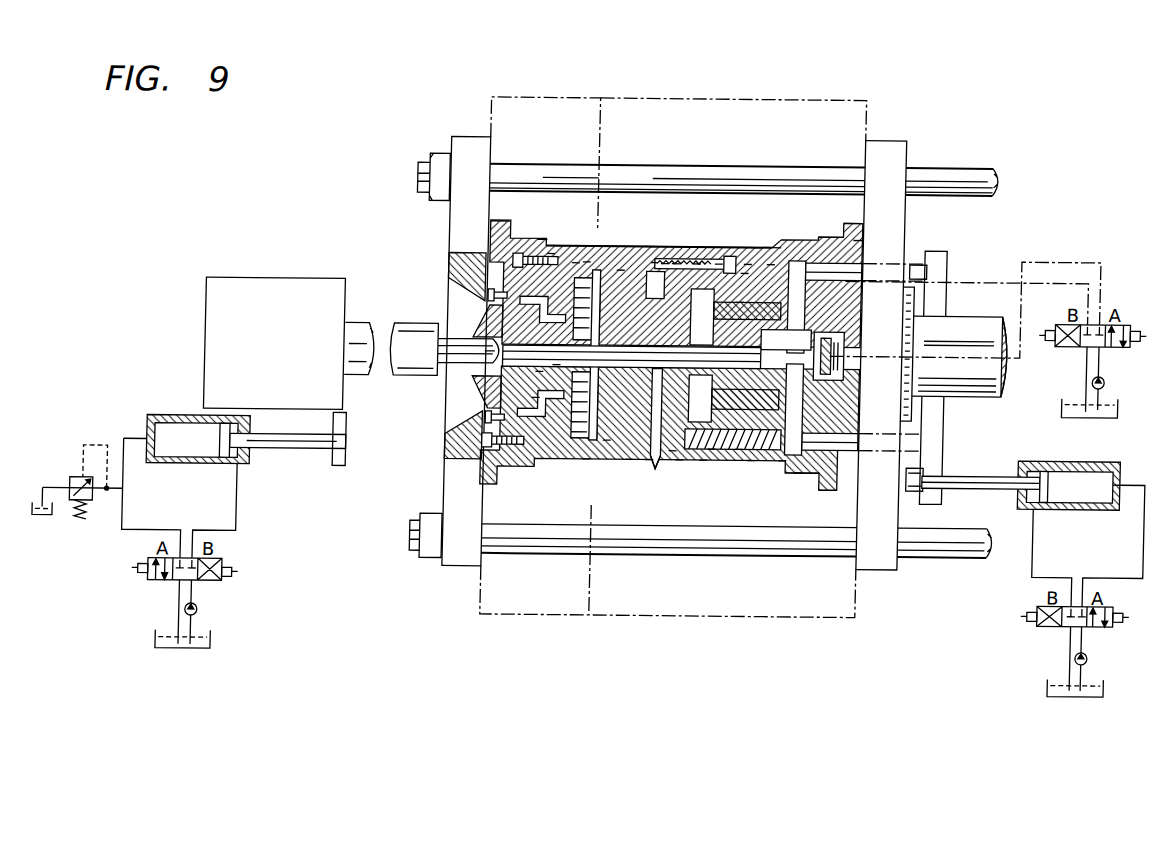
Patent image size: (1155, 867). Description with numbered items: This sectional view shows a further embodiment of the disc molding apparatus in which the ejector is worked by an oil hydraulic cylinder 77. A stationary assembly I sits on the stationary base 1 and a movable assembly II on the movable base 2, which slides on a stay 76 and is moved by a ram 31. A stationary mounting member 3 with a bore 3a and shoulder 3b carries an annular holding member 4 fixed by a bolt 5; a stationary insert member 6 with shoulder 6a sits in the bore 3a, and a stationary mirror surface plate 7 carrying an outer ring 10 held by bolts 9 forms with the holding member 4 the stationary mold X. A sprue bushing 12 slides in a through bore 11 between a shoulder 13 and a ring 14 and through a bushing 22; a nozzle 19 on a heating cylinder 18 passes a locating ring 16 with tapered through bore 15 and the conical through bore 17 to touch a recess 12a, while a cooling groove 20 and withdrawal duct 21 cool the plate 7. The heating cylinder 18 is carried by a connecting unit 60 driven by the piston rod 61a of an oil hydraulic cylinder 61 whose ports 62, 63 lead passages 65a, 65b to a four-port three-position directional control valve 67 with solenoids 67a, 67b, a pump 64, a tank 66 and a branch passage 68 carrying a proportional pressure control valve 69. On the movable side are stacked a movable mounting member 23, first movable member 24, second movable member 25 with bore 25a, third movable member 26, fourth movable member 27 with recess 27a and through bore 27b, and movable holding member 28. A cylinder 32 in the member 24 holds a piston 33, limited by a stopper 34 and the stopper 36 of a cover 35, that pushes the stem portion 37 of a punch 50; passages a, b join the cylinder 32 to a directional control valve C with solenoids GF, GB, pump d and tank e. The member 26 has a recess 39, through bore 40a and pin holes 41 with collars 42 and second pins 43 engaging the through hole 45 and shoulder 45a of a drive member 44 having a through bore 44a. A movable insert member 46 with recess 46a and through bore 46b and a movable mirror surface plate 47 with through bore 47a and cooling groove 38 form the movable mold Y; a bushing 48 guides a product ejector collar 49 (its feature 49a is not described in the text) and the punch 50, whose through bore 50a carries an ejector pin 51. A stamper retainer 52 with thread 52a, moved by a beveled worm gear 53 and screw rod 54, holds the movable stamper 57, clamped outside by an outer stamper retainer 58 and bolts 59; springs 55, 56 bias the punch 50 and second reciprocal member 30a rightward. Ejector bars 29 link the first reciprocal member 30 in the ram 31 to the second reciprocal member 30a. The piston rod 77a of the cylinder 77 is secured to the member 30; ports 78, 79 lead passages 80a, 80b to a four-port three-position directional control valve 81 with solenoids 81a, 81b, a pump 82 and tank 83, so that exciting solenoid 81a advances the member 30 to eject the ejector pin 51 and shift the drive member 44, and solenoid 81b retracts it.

The stationary base 1 is at (470, 137).
The movable base 2 is at (885, 139).
The stationary mounting member 3 is at (519, 238).
The bore 3a is at (498, 176).
The shoulder 3b is at (541, 240).
The annular holding member 4 is at (550, 252).
The bolt 5 is at (540, 250).
The stationary insert member 6 is at (500, 208).
The shoulder 6a is at (488, 262).
The stationary mirror surface plate 7 is at (575, 262).
The bolts 9 is at (604, 270).
The outer ring 10 is at (586, 260).
The through bore 11 is at (557, 366).
The sprue bushing 12 is at (537, 400).
The recess 12a is at (486, 355).
The shoulder 13 is at (540, 375).
The ring 14 is at (525, 390).
The tapered conical through bore 15 is at (480, 397).
The locating ring 16 is at (478, 312).
The conical through bore 17 is at (446, 425).
The heating cylinder 18 is at (362, 325).
The nozzle 19 is at (451, 333).
The spiral cooling groove 20 is at (568, 458).
The cooling water withdrawal duct 21 is at (530, 310).
The bushing 22 is at (562, 392).
The movable mounting member 23 is at (857, 236).
The first movable member 24 is at (850, 240).
The annular second movable member 25 is at (793, 240).
The bore 25a is at (808, 250).
The third movable member 26 is at (770, 250).
The fourth movable member 27 is at (696, 262).
The central recess 27a is at (707, 460).
The through bore 27b is at (676, 450).
The annular movable holding member 28 is at (664, 262).
The ejector bars 29 is at (914, 262).
The first reciprocal member 30 is at (948, 302).
The second reciprocal member 30a is at (804, 472).
The ram 31 is at (982, 398).
The cylinder 32 is at (845, 385).
The piston 33 is at (833, 342).
The stopper 34 is at (841, 488).
The cover 35 is at (842, 378).
The stopper 36 is at (840, 366).
The stem portion 37 is at (805, 385).
The spiral cooling groove 38 is at (660, 420).
The central recess 39 is at (802, 472).
The through bore 40a is at (780, 455).
The pin holes 41 is at (755, 465).
The cylindrical collar 42 is at (757, 450).
The second pin 43 is at (742, 455).
The drive member 44 is at (715, 450).
The through bore 44a is at (786, 340).
The through hole 45 is at (747, 262).
The shoulder 45a is at (718, 262).
The movable insert member 46 is at (672, 468).
The recess 46a is at (675, 262).
The through bore 46b is at (652, 258).
The movable mirror surface plate 47 is at (600, 445).
The through bore 47a is at (656, 385).
The bushing 48 is at (660, 284).
The product ejector collar 49 is at (704, 290).
The slot 49a is at (697, 306).
The punch 50 is at (744, 270).
The longitudinal through bore 50a is at (740, 300).
The ejector pin 51 is at (797, 312).
The stamper retainer 52 is at (620, 270).
The thread 52a is at (653, 468).
The beveled worm gear 53 is at (635, 330).
The screw rod 54 is at (683, 460).
The spring 55 is at (770, 262).
The spring 56 is at (786, 465).
The movable stamper 57 is at (610, 440).
The outer stamper retainer 58 is at (590, 462).
The bolts 59 is at (633, 465).
The connecting unit 60 is at (302, 281).
The oil hydraulic cylinder 61 is at (168, 419).
The piston rod 61a is at (305, 452).
The port 62 is at (243, 462).
The port 63 is at (150, 441).
The oil hydraulic pump 64 is at (205, 613).
The passage 65a is at (241, 534).
The passage 65b is at (127, 534).
The operating fluid tank 66 is at (47, 521).
The 4-port 3-position directional control valve 67 is at (232, 566).
The solenoid 67a is at (144, 573).
The solenoid 67b is at (238, 576).
The branch passage 68 is at (74, 488).
The electromagnetic proportional pressure control valve 69 is at (87, 450).
The stay 76 is at (941, 165).
The oil hydraulic cylinder 77 is at (1101, 457).
The piston rod 77a is at (985, 473).
The port 78 is at (1046, 500).
The port 79 is at (1124, 480).
The passage 80a is at (1037, 552).
The passage 80b is at (1149, 553).
The 4-port 3-position directional control valve 81 is at (1106, 622).
The solenoid 81a is at (1130, 612).
The solenoid 81b is at (1034, 610).
The oil hydraulic pump 82 is at (1095, 655).
The operating fluid tank 83 is at (1112, 685).
The stationary assembly I is at (538, 98).
The movable assembly II is at (730, 98).
The stationary mold X is at (560, 238).
The movable mold Y is at (648, 240).
The passage a is at (1073, 258).
The passage b is at (988, 279).
The 4-port 3-positional directional control valve C is at (1128, 320).
The solenoid GB is at (1046, 336).
The solenoid GF is at (1138, 337).
The oil hydraulic pump d is at (1106, 380).
The operating fluid tank e is at (1064, 400).